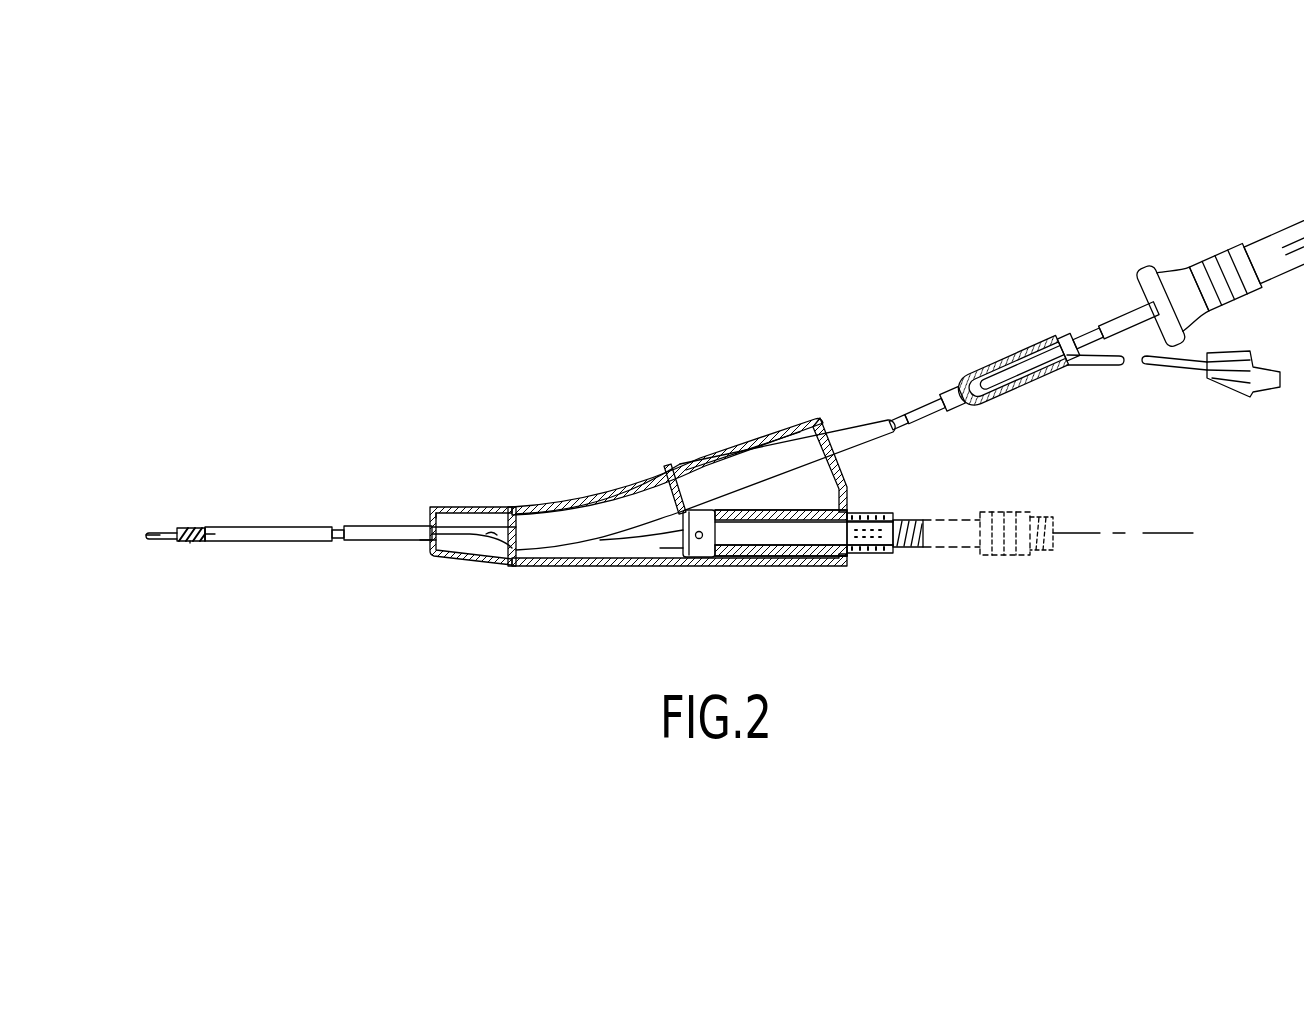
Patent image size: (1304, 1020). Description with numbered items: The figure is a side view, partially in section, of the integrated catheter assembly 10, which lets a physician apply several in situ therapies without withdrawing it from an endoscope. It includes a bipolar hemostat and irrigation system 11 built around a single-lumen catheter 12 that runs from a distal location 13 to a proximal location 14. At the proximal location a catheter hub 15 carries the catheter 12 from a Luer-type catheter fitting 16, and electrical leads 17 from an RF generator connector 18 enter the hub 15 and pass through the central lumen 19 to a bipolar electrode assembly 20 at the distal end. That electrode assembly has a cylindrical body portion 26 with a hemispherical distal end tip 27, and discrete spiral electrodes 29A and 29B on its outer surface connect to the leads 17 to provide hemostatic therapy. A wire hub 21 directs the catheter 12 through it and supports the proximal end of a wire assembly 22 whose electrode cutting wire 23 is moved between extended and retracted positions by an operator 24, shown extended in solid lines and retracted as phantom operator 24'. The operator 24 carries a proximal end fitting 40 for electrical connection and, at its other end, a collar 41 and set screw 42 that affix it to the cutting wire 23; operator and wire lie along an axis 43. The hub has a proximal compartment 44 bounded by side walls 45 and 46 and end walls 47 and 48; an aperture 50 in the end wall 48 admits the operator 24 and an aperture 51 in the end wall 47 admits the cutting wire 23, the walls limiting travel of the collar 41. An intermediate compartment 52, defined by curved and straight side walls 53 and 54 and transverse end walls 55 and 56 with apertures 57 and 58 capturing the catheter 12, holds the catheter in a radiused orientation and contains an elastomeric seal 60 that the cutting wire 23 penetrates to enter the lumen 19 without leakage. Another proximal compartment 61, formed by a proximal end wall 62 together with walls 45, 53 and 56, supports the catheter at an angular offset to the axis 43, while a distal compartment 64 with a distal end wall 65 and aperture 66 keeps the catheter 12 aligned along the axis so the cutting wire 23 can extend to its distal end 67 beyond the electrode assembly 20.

The integrated catheter assembly 10 is at (748, 419).
The bipolar hemostat and irrigation system 11 is at (990, 350).
The catheter 12 is at (293, 527).
The distal location 13 is at (131, 465).
The proximal location 14 is at (1098, 246).
The catheter hub 15 is at (1033, 362).
The catheter fitting 16 is at (1233, 393).
The electrical leads 17 is at (887, 418).
The RF generator connector 18 is at (1258, 248).
The central lumen 19 is at (338, 541).
The bipolar electrode assembly 20 is at (193, 528).
The wire hub 21 is at (592, 480).
The wire assembly 22 is at (905, 559).
The electrode cutting wire 23 is at (168, 538).
The operator 24 is at (804, 572).
The phantom operator 24' is at (1016, 508).
The cylindrical body portion 26 is at (208, 528).
The hemispherical distal end tip 27 is at (183, 528).
The spiral electrode 29A is at (207, 541).
The spiral electrode 29B is at (190, 543).
The proximal end fitting 40 is at (893, 511).
The collar 41 is at (714, 512).
The set screw 42 is at (698, 542).
The axis 43 is at (1133, 532).
The proximal compartment 44 is at (810, 556).
The side wall 45 is at (807, 507).
The side wall 46 is at (782, 557).
The end wall 47 is at (678, 548).
The end wall 48 is at (833, 566).
The aperture 50 is at (850, 546).
The aperture 51 is at (672, 542).
The intermediate compartment 52 is at (620, 505).
The curved side wall 53 is at (572, 495).
The straight side wall 54 is at (533, 564).
The transverse end wall 55 is at (503, 513).
The transverse end wall 56 is at (683, 490).
The aperture 57 is at (497, 535).
The aperture 58 is at (673, 490).
The elastomeric seal 60 is at (540, 512).
The proximal compartment 61 is at (798, 442).
The proximal end wall 62 is at (852, 481).
The distal compartment 64 is at (470, 522).
The distal end wall 65 is at (432, 512).
The aperture 66 is at (428, 533).
The distal end 67 is at (148, 533).